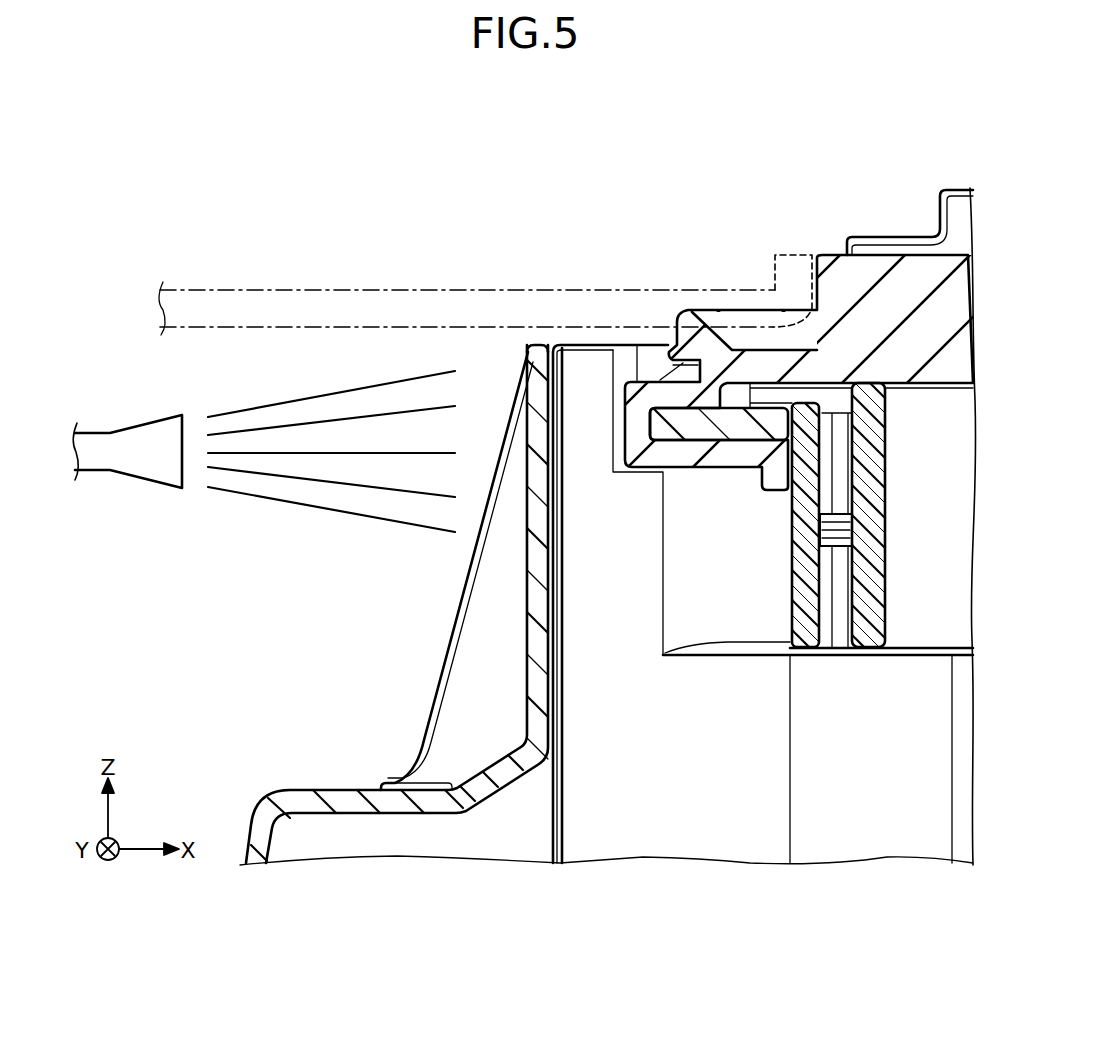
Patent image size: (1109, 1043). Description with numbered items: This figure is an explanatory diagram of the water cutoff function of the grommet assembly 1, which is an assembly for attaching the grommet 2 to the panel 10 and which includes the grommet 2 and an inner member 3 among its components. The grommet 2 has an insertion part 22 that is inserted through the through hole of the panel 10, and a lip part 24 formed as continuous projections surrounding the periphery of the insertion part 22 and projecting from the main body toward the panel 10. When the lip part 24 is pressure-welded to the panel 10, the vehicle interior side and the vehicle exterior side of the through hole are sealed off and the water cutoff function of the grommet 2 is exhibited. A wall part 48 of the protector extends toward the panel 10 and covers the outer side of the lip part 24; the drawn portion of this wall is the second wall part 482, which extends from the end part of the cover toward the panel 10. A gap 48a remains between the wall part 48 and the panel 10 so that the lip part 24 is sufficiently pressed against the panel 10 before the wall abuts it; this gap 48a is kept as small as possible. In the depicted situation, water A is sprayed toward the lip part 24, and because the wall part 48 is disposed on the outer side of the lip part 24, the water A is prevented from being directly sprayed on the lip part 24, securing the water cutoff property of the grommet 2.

The grommet assembly 1 is at (507, 160).
The grommet 2 is at (828, 253).
The insertion part 22 is at (903, 268).
The lip part 24 is at (682, 315).
The inner member 3 is at (800, 613).
The panel 10 is at (308, 288).
The wall part 48 is at (538, 520).
The second wall part 482 is at (451, 571).
The gap 48a is at (543, 338).
The water A is at (250, 495).